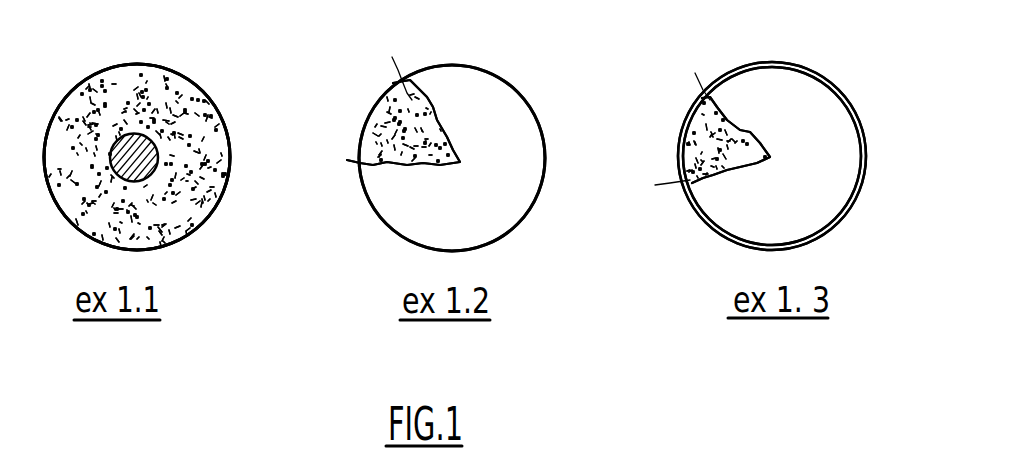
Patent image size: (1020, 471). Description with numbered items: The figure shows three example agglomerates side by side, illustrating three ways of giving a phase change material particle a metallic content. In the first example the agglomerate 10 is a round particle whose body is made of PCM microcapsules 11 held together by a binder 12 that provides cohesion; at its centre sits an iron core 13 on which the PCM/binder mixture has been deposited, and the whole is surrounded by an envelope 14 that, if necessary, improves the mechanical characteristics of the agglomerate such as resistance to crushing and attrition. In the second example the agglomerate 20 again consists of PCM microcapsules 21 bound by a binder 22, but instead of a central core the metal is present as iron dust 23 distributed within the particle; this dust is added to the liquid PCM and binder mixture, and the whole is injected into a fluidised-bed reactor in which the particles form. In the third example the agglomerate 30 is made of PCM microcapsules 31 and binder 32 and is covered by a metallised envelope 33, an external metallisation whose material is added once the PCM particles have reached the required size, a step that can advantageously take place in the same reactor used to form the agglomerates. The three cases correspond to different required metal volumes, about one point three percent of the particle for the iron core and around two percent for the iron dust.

The agglomerate 10 is at (167, 130).
The PCM microcapsules 11 is at (170, 222).
The binder 12 is at (88, 92).
The iron core 13 is at (158, 170).
The envelope 14 is at (225, 122).
The agglomerate 20 is at (477, 113).
The PCM microcapsules 21 is at (417, 103).
The binder 22 is at (370, 192).
The iron dust 23 is at (407, 102).
The agglomerate 30 is at (787, 107).
The PCM microcapsules 31 is at (687, 132).
The binder 32 is at (695, 107).
The metallised envelope 33 is at (697, 203).